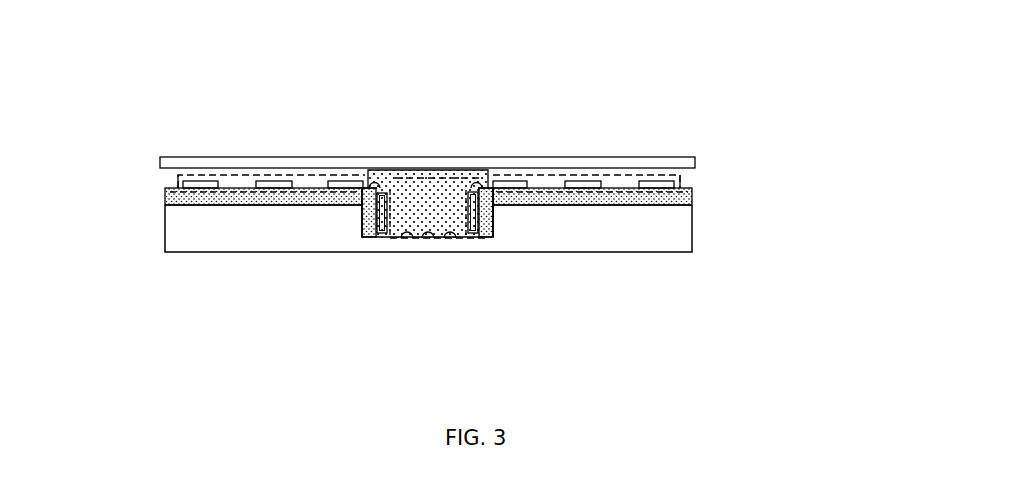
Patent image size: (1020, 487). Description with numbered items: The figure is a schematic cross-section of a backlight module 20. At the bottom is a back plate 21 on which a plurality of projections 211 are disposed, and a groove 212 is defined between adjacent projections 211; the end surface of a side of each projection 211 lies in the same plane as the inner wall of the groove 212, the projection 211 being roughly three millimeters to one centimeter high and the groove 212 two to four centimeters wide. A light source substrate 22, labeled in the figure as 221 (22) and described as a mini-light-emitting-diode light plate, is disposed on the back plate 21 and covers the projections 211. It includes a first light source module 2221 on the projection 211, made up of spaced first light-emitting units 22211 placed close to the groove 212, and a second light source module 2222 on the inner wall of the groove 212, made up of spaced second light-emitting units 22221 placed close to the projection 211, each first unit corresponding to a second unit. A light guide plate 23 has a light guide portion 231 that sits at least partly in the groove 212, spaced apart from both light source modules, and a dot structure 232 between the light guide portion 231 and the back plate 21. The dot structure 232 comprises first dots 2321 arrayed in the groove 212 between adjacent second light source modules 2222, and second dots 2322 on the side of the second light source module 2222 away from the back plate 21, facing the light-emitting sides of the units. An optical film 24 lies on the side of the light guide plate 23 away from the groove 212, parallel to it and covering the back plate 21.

The backlight module 20 is at (138, 44).
The back plate 21 is at (476, 280).
The projection 211 is at (212, 206).
The groove 212 is at (473, 240).
The light source substrate 22 is at (479, 287).
The wiring layer 221 is at (479, 287).
The first light source module 2221 is at (378, 293).
The first light-emitting unit 22211 is at (365, 189).
The second light source module 2222 is at (429, 287).
The second light-emitting unit 22221 is at (385, 238).
The light guide plate 23 is at (440, 263).
The light guide portion 231 is at (440, 263).
The dot structure 232 is at (357, 263).
The first dot 2321 is at (368, 184).
The second dot 2322 is at (403, 240).
The optical film 24 is at (160, 163).